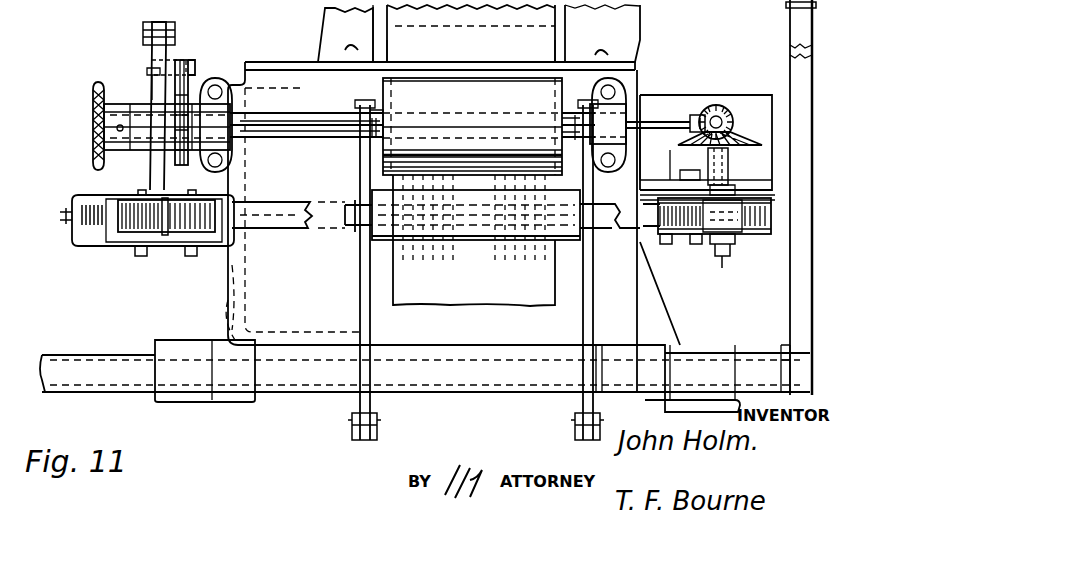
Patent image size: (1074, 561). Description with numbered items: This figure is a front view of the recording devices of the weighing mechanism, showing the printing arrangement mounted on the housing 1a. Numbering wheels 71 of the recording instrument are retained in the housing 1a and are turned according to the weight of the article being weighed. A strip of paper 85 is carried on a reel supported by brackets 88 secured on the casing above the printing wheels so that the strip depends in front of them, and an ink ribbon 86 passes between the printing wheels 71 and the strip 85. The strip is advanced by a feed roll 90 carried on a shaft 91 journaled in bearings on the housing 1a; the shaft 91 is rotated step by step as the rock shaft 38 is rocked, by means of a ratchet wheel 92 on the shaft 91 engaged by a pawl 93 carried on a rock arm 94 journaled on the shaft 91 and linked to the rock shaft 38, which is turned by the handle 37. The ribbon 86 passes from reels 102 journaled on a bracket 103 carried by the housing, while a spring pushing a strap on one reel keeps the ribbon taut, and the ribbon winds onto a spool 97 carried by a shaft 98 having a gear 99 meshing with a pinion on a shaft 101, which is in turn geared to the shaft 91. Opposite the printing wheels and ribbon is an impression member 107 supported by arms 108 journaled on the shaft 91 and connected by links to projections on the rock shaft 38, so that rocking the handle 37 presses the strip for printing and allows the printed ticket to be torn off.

The housing 1a is at (305, 327).
The handle 37 is at (790, 292).
The rock shaft 38 is at (425, 371).
The numbering wheels 71 is at (452, 270).
The strip of paper 85 is at (464, 33).
The ink ribbon 86 is at (298, 228).
The brackets 88 is at (332, 38).
The feed roll 90 is at (472, 126).
The shaft 91 is at (325, 128).
The ratchet wheel 92 is at (190, 95).
The pawl 93 is at (185, 60).
The rock arm 94 is at (157, 53).
The spool 97 is at (692, 240).
The shaft 98 is at (732, 254).
The gear 99 is at (745, 130).
The shaft 101 is at (705, 105).
The reel 102 is at (203, 197).
The bracket 103 is at (232, 183).
The impression member 107 is at (393, 254).
The arms 108 is at (370, 327).